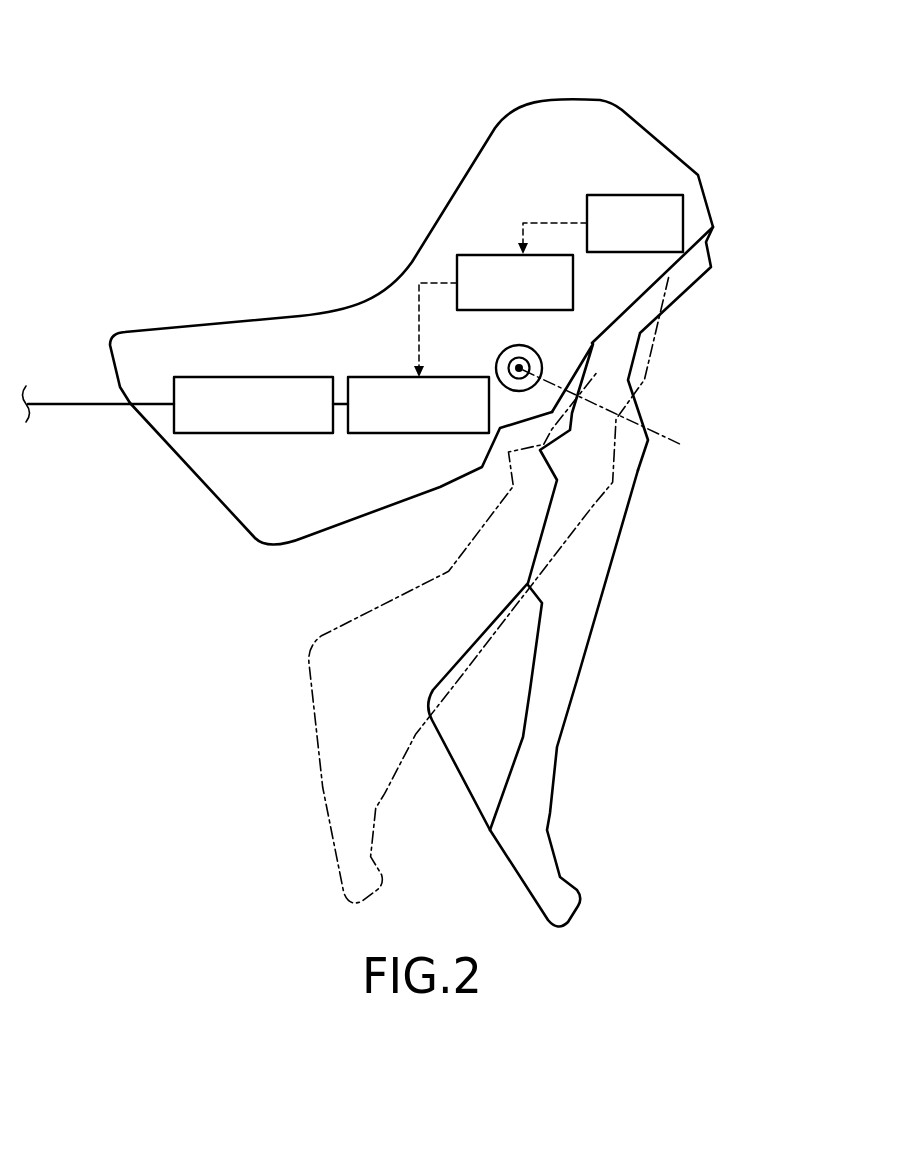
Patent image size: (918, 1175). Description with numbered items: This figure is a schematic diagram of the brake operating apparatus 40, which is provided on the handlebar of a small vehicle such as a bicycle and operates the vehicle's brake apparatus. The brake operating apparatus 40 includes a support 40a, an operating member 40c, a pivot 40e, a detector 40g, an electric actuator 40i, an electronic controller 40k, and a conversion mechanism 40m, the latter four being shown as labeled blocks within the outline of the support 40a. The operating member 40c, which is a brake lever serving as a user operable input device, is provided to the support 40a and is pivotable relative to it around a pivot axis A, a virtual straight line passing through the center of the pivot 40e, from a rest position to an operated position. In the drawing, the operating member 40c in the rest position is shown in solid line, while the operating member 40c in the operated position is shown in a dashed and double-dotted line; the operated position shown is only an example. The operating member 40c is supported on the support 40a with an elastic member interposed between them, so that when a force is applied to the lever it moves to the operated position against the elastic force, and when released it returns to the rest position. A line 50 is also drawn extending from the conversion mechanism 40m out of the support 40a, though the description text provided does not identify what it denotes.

The brake operating apparatus 40 is at (690, 86).
The support 40a is at (510, 123).
The operating member 40c is at (597, 610).
The pivot 40e is at (543, 363).
The detector 40g is at (683, 207).
The electronic controller 40k is at (573, 272).
The electric actuator 40i is at (390, 377).
The conversion mechanism 40m is at (308, 377).
The control cable 50 is at (70, 402).
The pivot axis A is at (610, 417).